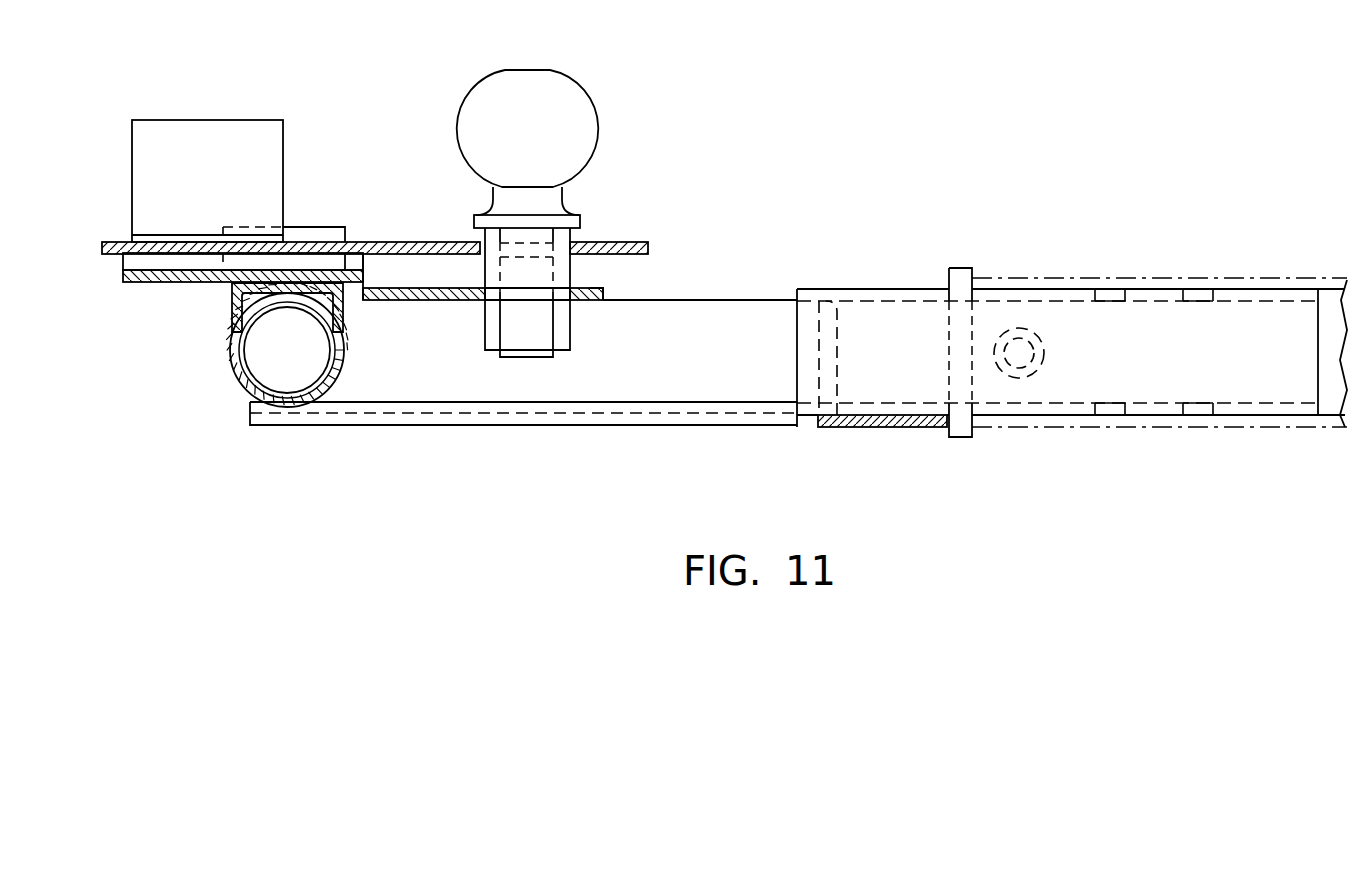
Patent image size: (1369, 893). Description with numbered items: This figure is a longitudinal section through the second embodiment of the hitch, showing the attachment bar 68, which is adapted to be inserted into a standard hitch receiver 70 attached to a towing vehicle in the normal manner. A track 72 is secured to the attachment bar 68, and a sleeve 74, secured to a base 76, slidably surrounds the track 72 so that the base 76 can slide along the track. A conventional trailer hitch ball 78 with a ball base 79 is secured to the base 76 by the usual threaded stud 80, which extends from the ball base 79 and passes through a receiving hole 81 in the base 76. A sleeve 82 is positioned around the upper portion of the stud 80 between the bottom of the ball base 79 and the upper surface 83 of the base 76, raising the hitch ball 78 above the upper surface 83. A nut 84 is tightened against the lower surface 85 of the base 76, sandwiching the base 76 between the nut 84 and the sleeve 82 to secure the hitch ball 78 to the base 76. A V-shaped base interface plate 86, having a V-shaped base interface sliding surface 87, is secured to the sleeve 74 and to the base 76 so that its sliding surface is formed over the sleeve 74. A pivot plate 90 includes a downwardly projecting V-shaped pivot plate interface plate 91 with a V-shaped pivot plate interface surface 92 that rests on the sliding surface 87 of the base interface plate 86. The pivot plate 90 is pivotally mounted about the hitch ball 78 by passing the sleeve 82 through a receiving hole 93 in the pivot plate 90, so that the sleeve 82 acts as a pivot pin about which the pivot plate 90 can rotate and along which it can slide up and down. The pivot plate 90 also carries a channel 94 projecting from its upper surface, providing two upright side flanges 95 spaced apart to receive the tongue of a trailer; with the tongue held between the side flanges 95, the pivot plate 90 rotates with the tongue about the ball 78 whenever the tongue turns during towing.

The attachment bar 68 is at (698, 425).
The hitch receiver 70 is at (1137, 280).
The track 72 is at (245, 352).
The sleeve 74 is at (233, 383).
The base 76 is at (387, 293).
The trailer hitch ball 78 is at (568, 95).
The ball base 79 is at (592, 228).
The threaded stud 80 is at (528, 358).
The receiving hole 81 is at (498, 293).
The sleeve 82 is at (572, 268).
The upper surface 83 is at (590, 290).
The nut 84 is at (567, 323).
The lower surface 85 is at (460, 302).
The V-shaped base interface plate 86 is at (222, 300).
The V-shaped base interface sliding surface 87 is at (307, 287).
The pivot plate 90 is at (405, 242).
The V-shaped pivot plate interface plate 91 is at (125, 272).
The V-shaped pivot plate interface surface 92 is at (157, 282).
The receiving hole 93 is at (608, 250).
The channel 94 is at (157, 235).
The upright side flanges 95 is at (194, 128).